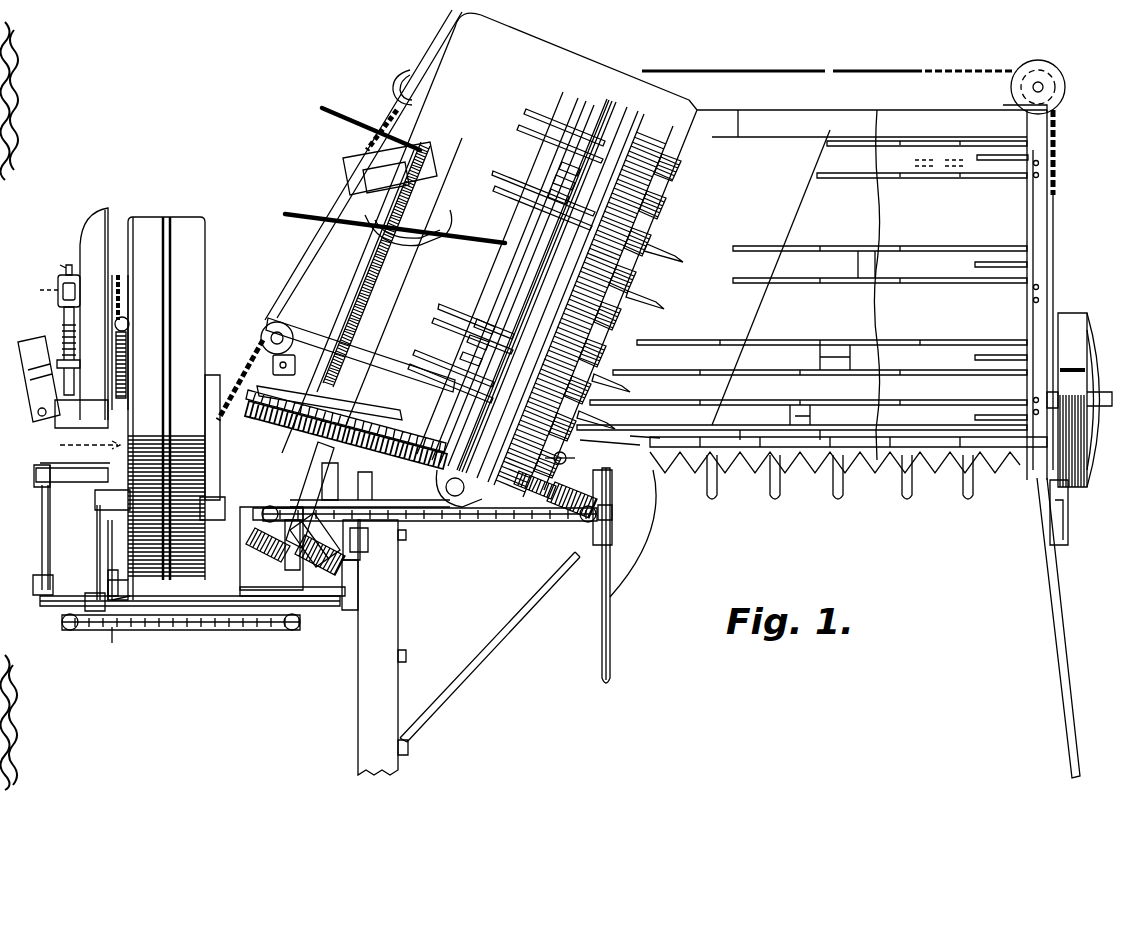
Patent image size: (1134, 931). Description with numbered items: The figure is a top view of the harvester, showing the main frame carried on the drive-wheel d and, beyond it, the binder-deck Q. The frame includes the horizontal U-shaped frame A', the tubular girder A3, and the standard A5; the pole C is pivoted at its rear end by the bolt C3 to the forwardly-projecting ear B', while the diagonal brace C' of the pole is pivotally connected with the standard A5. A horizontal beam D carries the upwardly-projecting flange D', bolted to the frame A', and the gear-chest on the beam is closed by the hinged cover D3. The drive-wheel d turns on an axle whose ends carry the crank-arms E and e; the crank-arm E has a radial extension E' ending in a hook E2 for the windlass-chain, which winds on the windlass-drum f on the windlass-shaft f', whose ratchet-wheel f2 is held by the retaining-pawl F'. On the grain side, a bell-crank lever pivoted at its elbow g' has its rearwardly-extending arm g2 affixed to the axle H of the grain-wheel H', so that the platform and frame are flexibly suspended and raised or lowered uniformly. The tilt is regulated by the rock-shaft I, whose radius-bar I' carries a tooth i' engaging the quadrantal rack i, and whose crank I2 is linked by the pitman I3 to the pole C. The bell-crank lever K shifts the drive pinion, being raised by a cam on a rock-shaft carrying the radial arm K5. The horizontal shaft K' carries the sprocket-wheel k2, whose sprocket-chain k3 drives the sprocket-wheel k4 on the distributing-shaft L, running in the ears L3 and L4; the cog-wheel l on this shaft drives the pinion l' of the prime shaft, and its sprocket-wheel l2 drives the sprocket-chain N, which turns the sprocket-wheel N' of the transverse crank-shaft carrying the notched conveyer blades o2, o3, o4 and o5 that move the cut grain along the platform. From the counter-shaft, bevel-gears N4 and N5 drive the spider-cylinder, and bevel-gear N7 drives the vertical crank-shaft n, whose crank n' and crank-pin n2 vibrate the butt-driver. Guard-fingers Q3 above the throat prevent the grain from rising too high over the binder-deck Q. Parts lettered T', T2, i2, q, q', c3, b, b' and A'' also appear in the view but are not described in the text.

The quadrantal rack i is at (558, 353).
The notched blade o5 is at (922, 151).
The notched blade o4 is at (880, 256).
The notched blade o3 is at (832, 346).
The notched blade o2 is at (802, 396).
The axle of the grain-wheel H is at (1091, 400).
The grain-wheel H' is at (1072, 361).
The rearwardly-extending arm of bell-crank lever g2 is at (1056, 400).
The elbow pivot of bell-crank lever g' is at (1063, 512).
The binder-deck Q is at (457, 279).
The guard-fingers Q3 is at (516, 220).
The rods c3 is at (446, 372).
The plate q is at (566, 189).
The plate q' is at (569, 171).
The vertical crank-shaft n is at (486, 354).
The crank n' is at (487, 336).
The horizontal beam D is at (94, 314).
The drive-wheel d is at (166, 408).
The crank-arm e is at (212, 447).
The block T' is at (39, 379).
The block T2 is at (81, 414).
The ratchet-wheel f2 is at (58, 261).
The windlass-shaft f' is at (51, 335).
The windlass-drum f is at (112, 290).
The retaining-pawl F' is at (129, 342).
The hook E2 is at (132, 322).
The radial extension E' is at (119, 365).
The crank-arm E is at (82, 444).
The radial arm K5 is at (71, 475).
The horizontal shaft K' is at (112, 498).
The bell-crank lever K is at (61, 540).
The hinged cover D3 is at (93, 503).
The upwardly-projecting flange D' is at (82, 552).
The horizontal U-shaped frame A' is at (118, 569).
The rock-shaft I is at (190, 595).
The radius-bar I' is at (88, 594).
The pin i2 is at (108, 578).
The tooth i' is at (129, 593).
The sprocket-chain k3 is at (181, 634).
The sprocket-wheel k2 is at (73, 634).
The sprocket-wheel k4 is at (288, 633).
The ear L4 is at (271, 538).
The sprocket-wheel l2 is at (273, 545).
The pinion l' is at (320, 555).
The cog-wheel l is at (268, 545).
The distributing-shaft L is at (303, 545).
The ear (groove) L3 is at (292, 587).
The bracket A'' is at (318, 481).
The tubular girder A3 is at (370, 489).
The forwardly-projecting ear B' is at (355, 526).
The bolt C3 is at (416, 541).
The pole C is at (383, 647).
The diagonal brace C' is at (490, 647).
The pitman I3 is at (358, 595).
The crank I2 is at (346, 612).
The sprocket-chain N is at (429, 520).
The sprocket-wheel N' is at (572, 519).
The bevel-gear N5 is at (535, 485).
The bevel-gear N7 is at (612, 483).
The bevel-gear N4 is at (598, 512).
The crank-pin n2 is at (575, 460).
The lever b is at (610, 436).
The lever b' is at (645, 443).
The standard A5 is at (619, 575).